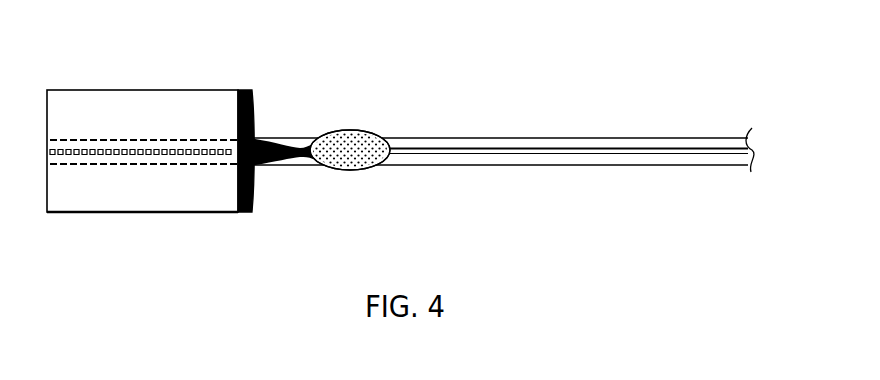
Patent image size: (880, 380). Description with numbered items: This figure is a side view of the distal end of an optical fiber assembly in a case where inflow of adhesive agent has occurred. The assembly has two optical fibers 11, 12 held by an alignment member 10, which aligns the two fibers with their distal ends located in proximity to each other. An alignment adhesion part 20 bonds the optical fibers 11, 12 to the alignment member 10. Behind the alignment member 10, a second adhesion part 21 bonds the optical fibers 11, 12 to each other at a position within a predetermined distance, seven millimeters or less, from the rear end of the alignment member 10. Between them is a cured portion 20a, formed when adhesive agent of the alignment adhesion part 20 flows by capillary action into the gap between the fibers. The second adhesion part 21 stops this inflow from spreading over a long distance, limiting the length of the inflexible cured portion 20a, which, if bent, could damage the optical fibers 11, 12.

The alignment member 10 is at (142, 106).
The optical fiber 11 is at (634, 138).
The optical fiber 12 is at (640, 167).
The alignment adhesion part 20 is at (252, 206).
The cured portion 20a is at (286, 142).
The second adhesion part 21 is at (368, 134).